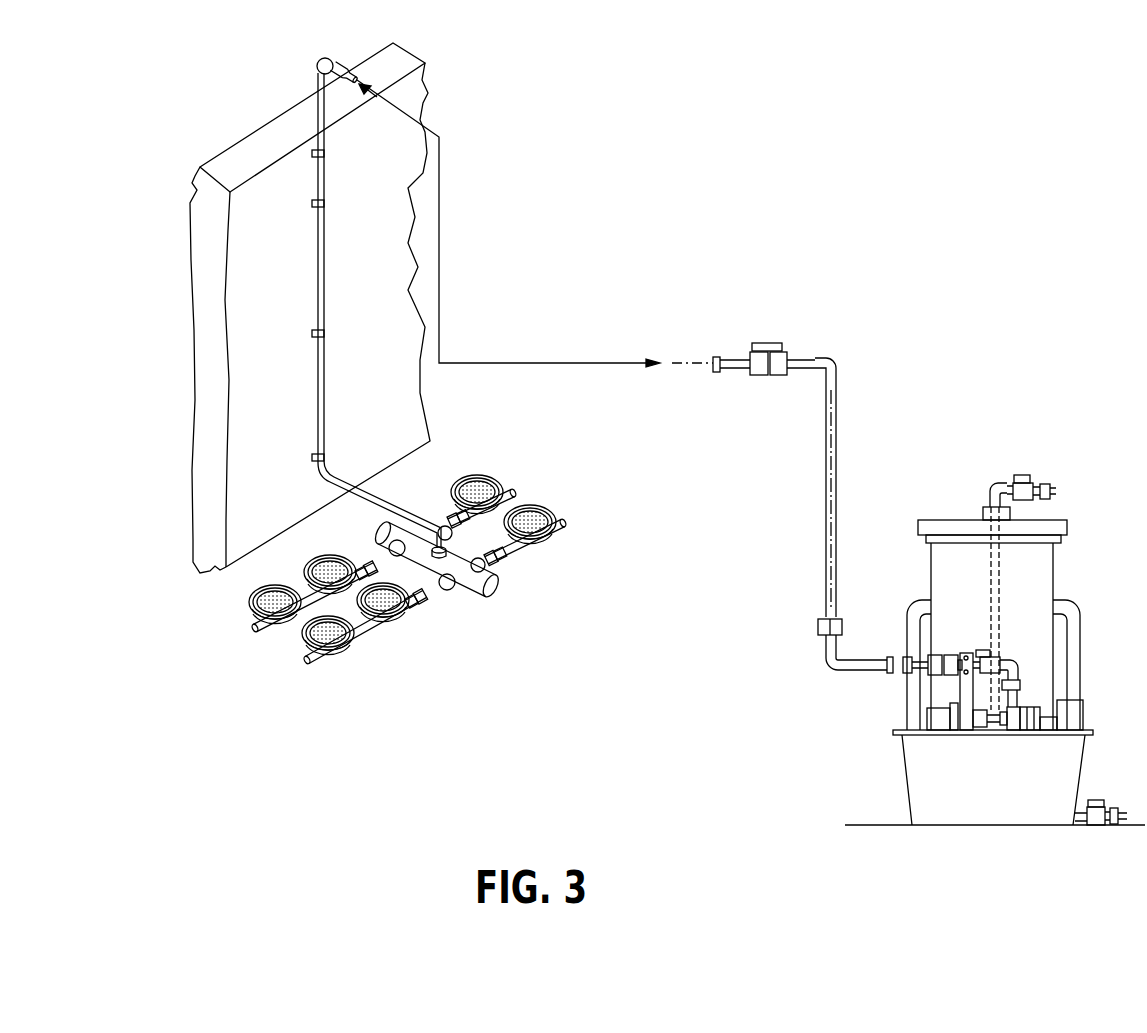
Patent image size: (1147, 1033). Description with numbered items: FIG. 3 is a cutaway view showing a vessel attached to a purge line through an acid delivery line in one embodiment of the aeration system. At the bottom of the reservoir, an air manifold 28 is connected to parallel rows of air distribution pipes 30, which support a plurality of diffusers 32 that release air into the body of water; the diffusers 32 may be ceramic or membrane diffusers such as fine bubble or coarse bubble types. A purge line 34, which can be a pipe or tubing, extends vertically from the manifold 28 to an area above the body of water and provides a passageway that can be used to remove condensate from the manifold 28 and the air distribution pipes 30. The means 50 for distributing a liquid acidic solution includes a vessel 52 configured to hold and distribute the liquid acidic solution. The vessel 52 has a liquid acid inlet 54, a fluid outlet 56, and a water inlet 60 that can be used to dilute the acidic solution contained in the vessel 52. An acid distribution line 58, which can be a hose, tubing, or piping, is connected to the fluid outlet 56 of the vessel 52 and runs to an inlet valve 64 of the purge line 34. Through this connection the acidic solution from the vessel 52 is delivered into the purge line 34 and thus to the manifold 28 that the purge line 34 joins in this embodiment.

The air manifold 28 is at (470, 585).
The air distribution pipes 30 is at (368, 633).
The diffusers 32 is at (533, 520).
The purge line 34 is at (313, 64).
The means for distributing a liquid acidic solution 50 is at (957, 395).
The vessel 52 is at (1040, 570).
The liquid acid inlet 54 is at (1035, 478).
The fluid outlet 56 is at (925, 672).
The acid distribution line 58 is at (840, 400).
The water inlet 60 is at (1107, 800).
The inlet valve 64 is at (356, 73).